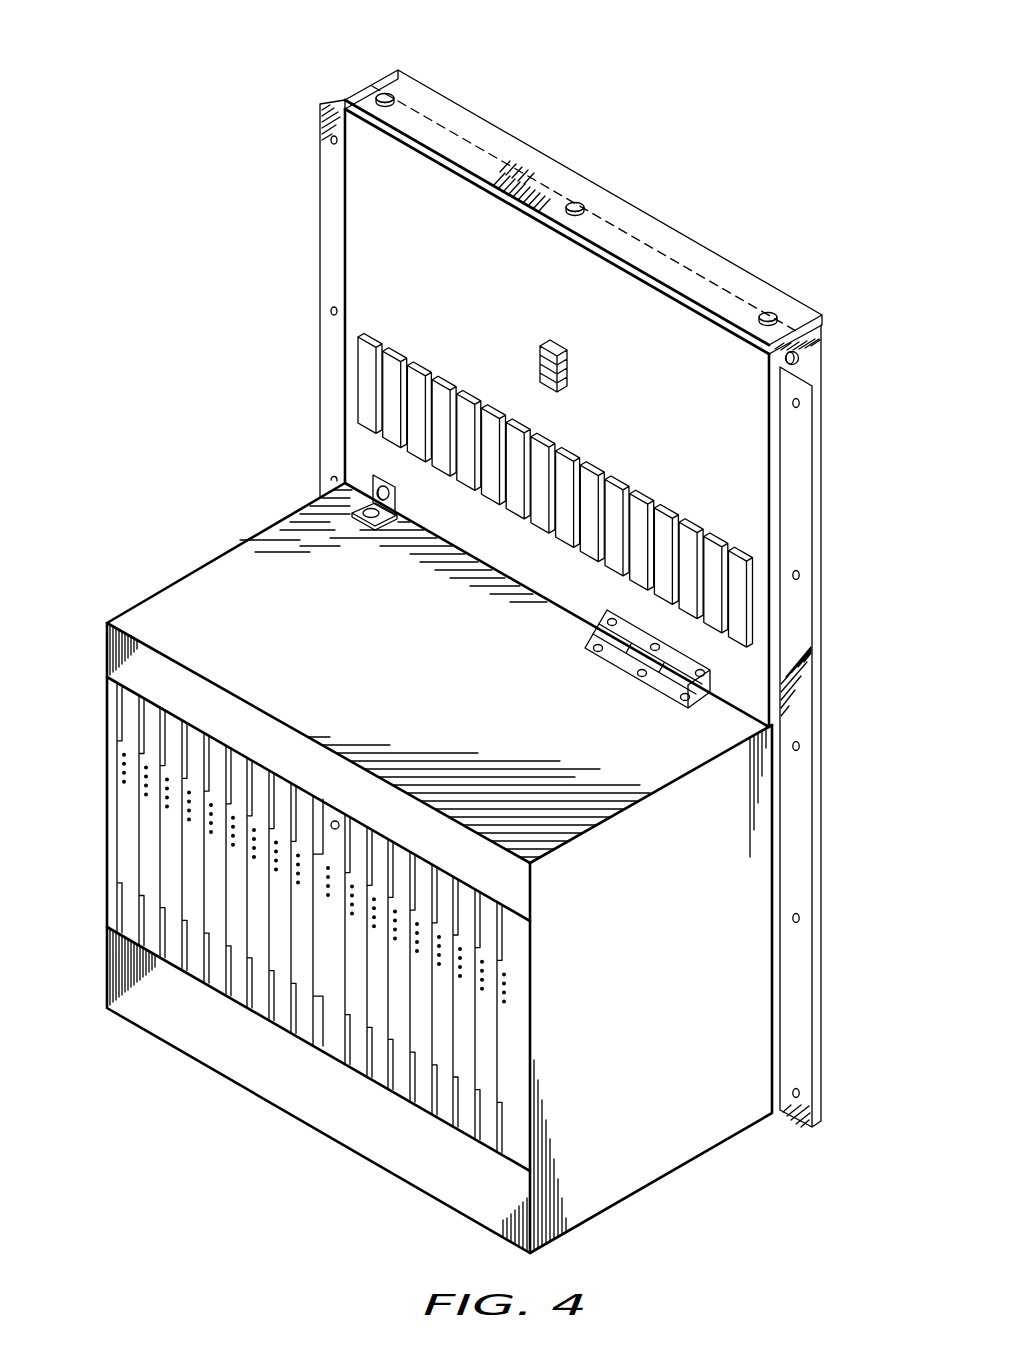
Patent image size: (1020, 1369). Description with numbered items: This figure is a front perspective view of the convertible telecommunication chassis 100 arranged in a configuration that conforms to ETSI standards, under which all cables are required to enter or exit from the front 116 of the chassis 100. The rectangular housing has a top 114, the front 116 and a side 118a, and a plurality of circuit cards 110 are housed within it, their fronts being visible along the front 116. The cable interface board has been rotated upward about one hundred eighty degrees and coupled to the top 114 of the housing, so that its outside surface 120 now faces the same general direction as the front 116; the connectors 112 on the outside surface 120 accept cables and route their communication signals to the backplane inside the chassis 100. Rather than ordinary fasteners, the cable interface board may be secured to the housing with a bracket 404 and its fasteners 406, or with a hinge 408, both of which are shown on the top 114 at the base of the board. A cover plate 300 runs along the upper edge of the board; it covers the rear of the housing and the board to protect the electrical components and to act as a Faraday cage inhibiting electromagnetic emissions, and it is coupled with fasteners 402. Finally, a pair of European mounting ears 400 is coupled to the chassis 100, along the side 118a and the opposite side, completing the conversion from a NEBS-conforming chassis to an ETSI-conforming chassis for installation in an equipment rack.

The chassis 100 is at (212, 447).
The circuit cards 110 is at (150, 825).
The connectors 112 is at (444, 378).
The top 114 is at (462, 691).
The front 116 is at (305, 1108).
The side 118a is at (735, 1071).
The outside surface 120 is at (423, 266).
The cover plate 300 is at (473, 128).
The European mounting ears 400 is at (328, 207).
The fasteners 402 is at (385, 94).
The bracket 404 is at (364, 526).
The fasteners 406 is at (396, 502).
The hinge 408 is at (622, 661).